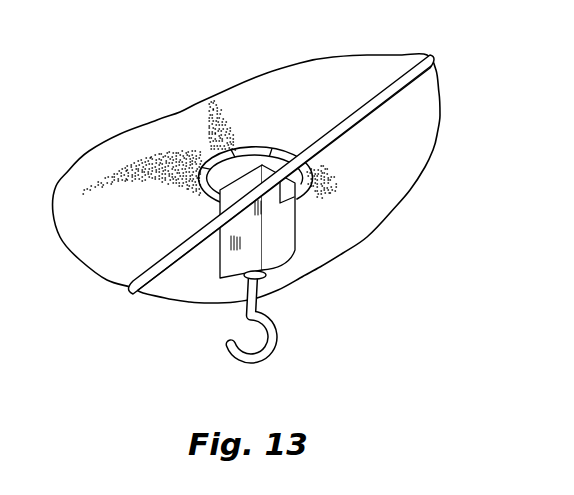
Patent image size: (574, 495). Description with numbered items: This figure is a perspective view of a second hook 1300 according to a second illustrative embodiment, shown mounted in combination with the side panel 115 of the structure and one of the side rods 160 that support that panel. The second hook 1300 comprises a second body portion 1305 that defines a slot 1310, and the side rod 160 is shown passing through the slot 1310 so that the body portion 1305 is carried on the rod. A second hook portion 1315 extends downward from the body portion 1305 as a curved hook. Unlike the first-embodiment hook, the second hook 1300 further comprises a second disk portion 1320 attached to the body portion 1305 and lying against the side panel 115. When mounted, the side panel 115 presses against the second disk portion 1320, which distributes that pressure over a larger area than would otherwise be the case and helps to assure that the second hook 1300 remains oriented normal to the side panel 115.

The side panel 115 is at (138, 233).
The side rod 160 is at (378, 108).
The second hook 1300 is at (265, 262).
The second body portion 1305 is at (296, 231).
The slot 1310 is at (295, 194).
The second hook portion 1315 is at (288, 330).
The second disk portion 1320 is at (267, 148).